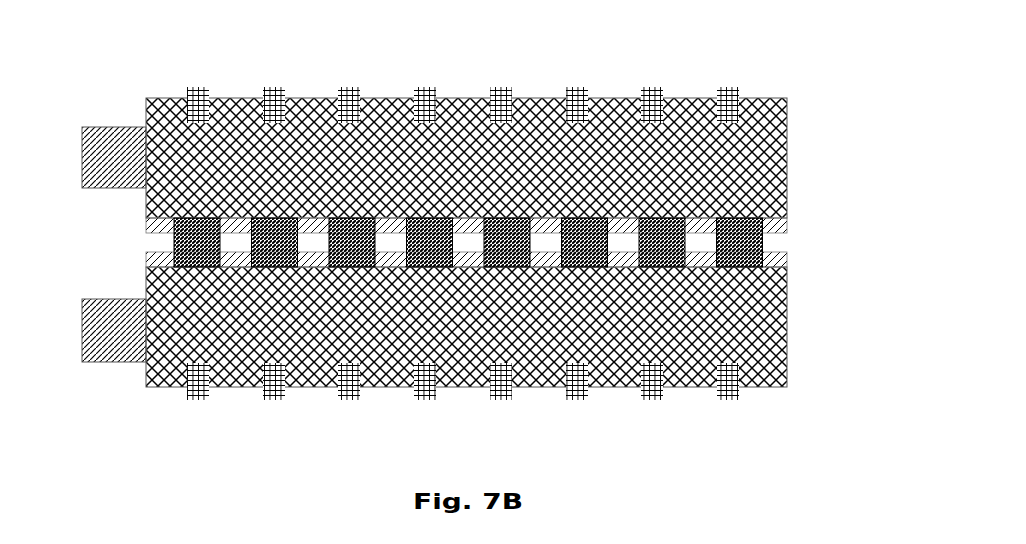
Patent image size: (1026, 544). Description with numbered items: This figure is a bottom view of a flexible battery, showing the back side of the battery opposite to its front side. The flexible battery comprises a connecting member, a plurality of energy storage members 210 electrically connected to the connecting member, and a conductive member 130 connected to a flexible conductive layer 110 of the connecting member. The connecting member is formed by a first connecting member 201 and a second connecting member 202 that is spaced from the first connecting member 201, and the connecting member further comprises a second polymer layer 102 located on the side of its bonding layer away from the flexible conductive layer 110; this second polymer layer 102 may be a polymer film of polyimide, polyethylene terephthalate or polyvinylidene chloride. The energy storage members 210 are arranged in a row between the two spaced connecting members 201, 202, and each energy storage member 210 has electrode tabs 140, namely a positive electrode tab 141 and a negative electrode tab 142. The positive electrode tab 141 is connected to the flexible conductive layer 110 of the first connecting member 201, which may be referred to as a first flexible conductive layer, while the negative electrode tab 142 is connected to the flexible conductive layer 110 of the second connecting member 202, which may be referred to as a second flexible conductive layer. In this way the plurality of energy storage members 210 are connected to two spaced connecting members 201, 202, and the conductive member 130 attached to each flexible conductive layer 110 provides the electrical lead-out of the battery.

The flexible conductive layer 110 is at (787, 170).
The conductive member 130 is at (113, 125).
The electrode tabs 140 is at (463, 245).
The positive electrode tab 141 is at (567, 90).
The negative electrode tab 142 is at (582, 400).
The second polymer layer 102 is at (470, 235).
The first connecting member 201 is at (788, 232).
The second connecting member 202 is at (788, 258).
The energy storage member 210 is at (174, 236).